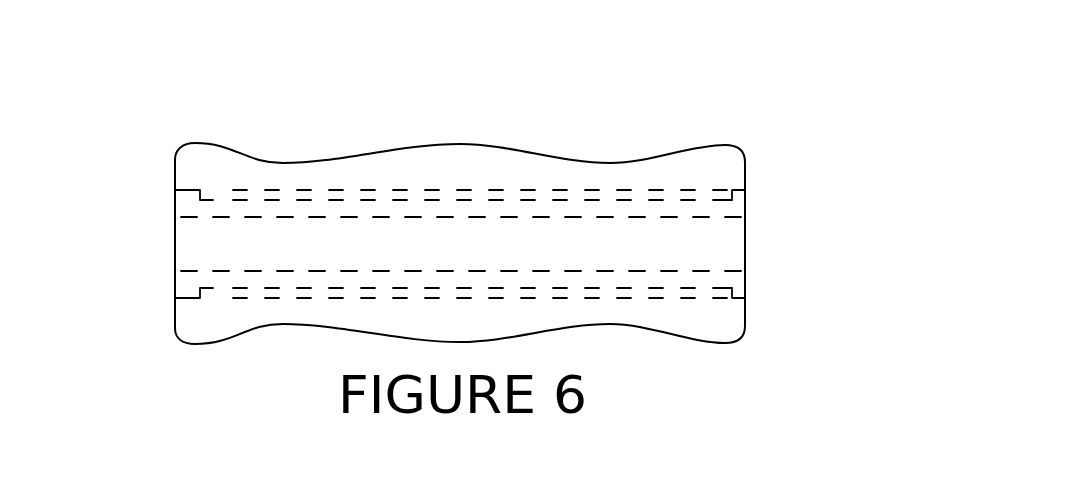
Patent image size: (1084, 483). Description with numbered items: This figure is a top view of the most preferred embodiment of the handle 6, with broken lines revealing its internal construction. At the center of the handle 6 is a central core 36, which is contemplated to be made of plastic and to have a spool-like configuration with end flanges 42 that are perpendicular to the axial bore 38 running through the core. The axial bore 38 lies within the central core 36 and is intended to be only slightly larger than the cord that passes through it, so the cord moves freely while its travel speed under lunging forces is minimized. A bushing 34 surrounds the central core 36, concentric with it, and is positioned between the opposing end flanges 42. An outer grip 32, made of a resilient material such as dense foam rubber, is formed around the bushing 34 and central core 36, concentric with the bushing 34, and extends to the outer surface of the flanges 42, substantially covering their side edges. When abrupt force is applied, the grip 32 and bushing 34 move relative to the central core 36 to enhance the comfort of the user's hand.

The handle 6 is at (466, 241).
The outer grip 32 is at (720, 331).
The bushing 34 is at (245, 308).
The central core 36 is at (402, 195).
The axial bore 38 is at (197, 242).
The end flanges 42 is at (169, 178).